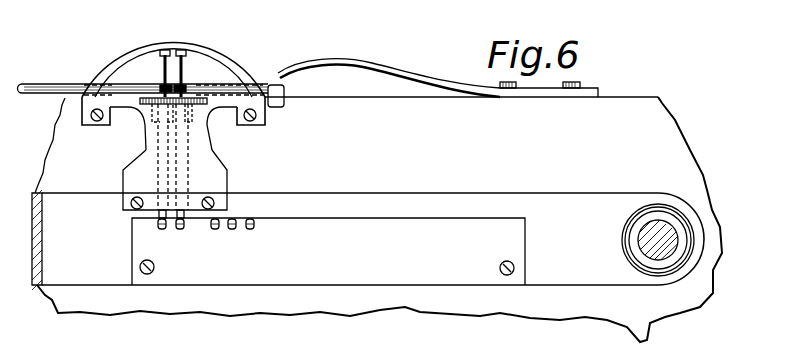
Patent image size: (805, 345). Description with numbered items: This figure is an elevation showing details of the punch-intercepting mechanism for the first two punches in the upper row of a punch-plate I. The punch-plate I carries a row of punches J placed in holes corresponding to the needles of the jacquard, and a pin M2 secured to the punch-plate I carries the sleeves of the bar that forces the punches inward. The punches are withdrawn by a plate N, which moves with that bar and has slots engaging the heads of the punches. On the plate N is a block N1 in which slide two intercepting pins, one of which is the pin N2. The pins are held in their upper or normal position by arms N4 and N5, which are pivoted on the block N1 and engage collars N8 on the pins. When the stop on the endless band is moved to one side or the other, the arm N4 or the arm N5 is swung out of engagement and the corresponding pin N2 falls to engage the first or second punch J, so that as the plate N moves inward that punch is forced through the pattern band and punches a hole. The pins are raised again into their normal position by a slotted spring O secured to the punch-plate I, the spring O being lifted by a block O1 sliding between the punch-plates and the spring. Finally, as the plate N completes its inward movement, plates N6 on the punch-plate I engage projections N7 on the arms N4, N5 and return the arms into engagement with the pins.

The punch-plate I is at (378, 219).
The plate N is at (368, 240).
The block N1 is at (244, 168).
The intercepting pin N2 is at (161, 82).
The arm N4 is at (147, 107).
The arm N5 is at (197, 106).
The plate N6 is at (248, 71).
The projection N7 is at (186, 86).
The collar N8 is at (231, 40).
The slotted spring O is at (395, 72).
The block O1 is at (282, 99).
The punch J is at (254, 226).
The pin M2 is at (662, 242).